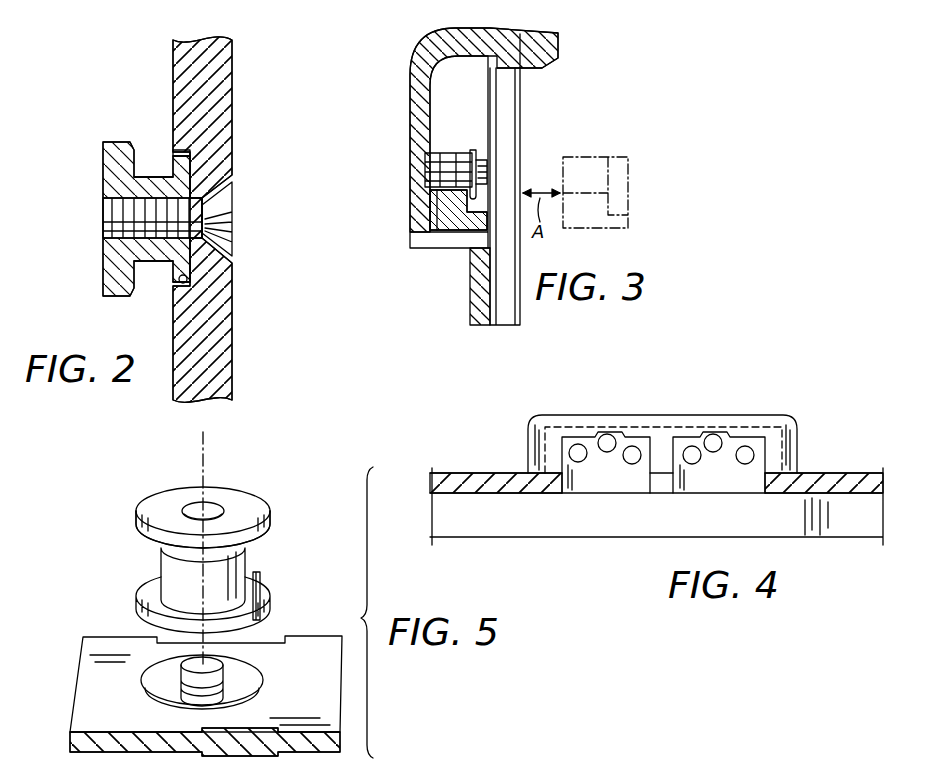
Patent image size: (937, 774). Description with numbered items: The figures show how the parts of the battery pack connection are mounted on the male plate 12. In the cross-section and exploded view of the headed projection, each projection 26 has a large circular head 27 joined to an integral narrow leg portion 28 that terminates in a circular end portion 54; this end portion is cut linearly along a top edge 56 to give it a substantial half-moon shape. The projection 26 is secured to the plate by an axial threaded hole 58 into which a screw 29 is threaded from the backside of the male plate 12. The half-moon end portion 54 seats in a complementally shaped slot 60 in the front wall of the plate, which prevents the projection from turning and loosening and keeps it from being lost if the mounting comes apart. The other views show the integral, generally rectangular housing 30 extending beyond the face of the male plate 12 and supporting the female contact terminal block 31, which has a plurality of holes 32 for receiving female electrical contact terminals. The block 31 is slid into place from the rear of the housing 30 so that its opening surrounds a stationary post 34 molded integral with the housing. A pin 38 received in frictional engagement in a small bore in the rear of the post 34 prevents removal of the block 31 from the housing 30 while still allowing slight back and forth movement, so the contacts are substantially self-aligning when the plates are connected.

In FIG. 2, the male plate 12 is at (213, 117).
In FIG. 3, the male plate 12 is at (505, 179).
In FIG. 4, the male plate 12 is at (829, 473).
In FIG. 5, the male plate 12 is at (95, 688).
In FIG. 5, the projection 26 is at (267, 563).
In FIG. 2, the circular head 27 is at (106, 162).
In FIG. 5, the circular head 27 is at (252, 514).
In FIG. 2, the leg portion 28 is at (151, 263).
In FIG. 5, the leg portion 28 is at (170, 570).
In FIG. 2, the screw 29 is at (204, 223).
In FIG. 5, the screw 29 is at (225, 685).
In FIG. 3, the housing 30 is at (409, 118).
In FIG. 4, the housing 30 is at (680, 415).
In FIG. 3, the female contact terminal block 31 is at (462, 230).
In FIG. 4, the female contact terminal block 31 is at (613, 481).
In FIG. 3, the holes 32 is at (437, 232).
In FIG. 4, the holes 32 is at (609, 440).
In FIG. 3, the stationary post 34 is at (455, 170).
In FIG. 3, the pin 38 is at (478, 197).
In FIG. 2, the circular end portion 54 is at (186, 166).
In FIG. 5, the circular end portion 54 is at (150, 618).
In FIG. 5, the top edge 56 is at (262, 595).
In FIG. 2, the axial threaded hole 58 is at (104, 226).
In FIG. 5, the axial threaded hole 58 is at (213, 504).
In FIG. 2, the slot 60 is at (186, 278).
In FIG. 5, the slot 60 is at (247, 692).